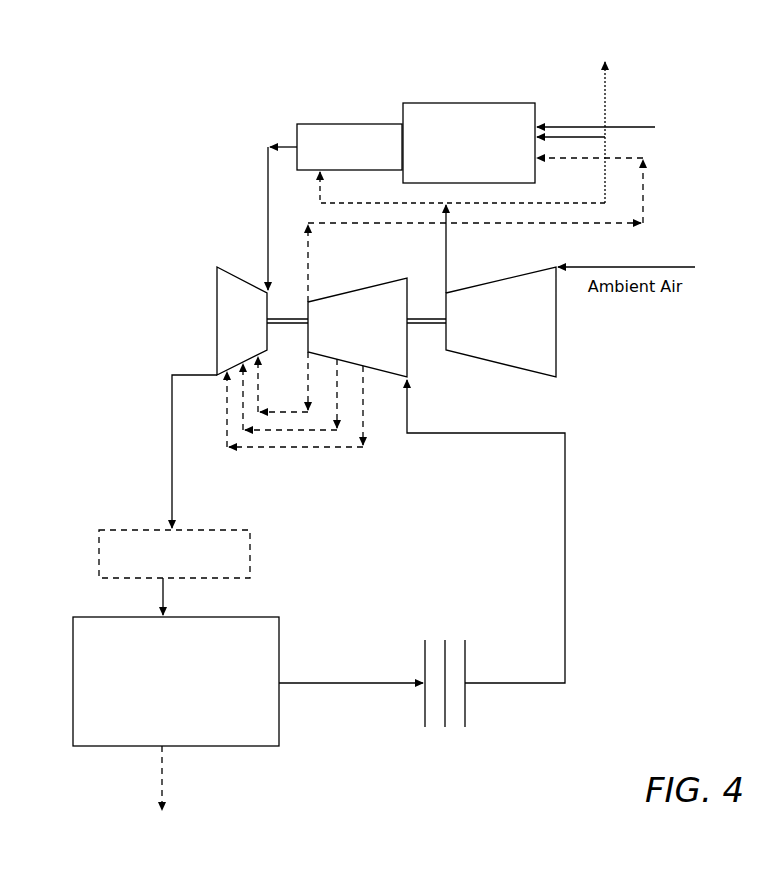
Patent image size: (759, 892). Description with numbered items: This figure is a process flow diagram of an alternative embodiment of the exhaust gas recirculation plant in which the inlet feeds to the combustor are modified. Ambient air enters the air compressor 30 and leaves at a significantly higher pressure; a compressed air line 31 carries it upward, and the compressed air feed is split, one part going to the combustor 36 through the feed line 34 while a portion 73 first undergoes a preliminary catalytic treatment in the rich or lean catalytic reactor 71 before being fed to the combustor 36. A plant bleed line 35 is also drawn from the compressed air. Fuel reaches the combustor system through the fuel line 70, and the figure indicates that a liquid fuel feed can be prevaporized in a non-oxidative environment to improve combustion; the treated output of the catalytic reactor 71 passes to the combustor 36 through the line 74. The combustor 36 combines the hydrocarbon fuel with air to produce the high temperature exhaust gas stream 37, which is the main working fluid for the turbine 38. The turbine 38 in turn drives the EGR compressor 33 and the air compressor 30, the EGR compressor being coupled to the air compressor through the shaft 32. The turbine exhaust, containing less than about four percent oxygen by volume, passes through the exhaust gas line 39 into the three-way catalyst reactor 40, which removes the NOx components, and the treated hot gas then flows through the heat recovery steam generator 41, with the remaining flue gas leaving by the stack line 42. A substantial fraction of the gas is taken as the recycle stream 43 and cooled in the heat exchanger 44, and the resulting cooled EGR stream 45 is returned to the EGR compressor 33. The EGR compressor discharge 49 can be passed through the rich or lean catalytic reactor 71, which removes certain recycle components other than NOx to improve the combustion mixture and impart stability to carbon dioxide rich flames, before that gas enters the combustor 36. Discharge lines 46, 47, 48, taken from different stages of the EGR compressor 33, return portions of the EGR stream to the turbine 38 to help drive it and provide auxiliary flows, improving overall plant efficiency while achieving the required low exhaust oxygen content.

The compressor 30 is at (557, 355).
The compressed air line 31 is at (450, 268).
The shaft 32 is at (422, 325).
The EGR compressor 33 is at (394, 283).
The feed line 34 is at (569, 137).
The plant bleed line 35 is at (607, 100).
The combustor 36 is at (338, 123).
The exhaust gas stream 37 is at (266, 228).
The turbine 38 is at (256, 327).
The exhaust gas line 39 is at (174, 497).
The 3-way catalyst reactor 40 is at (97, 558).
The heat recovery steam generator 41 is at (73, 667).
The stack line 42 is at (165, 790).
The recycle stream 43 is at (360, 684).
The heat exchanger 44 is at (447, 729).
The cooled EGR stream 45 is at (508, 683).
The discharge line 46 is at (330, 449).
The discharge line 47 is at (290, 432).
The discharge line 48 is at (259, 396).
The EGR compressor discharge 49 is at (310, 272).
The fuel line 70 is at (682, 116).
The rich or lean catalytic reactor 71 is at (462, 103).
The portion 73 is at (648, 200).
The reactor to combustor line 74 is at (338, 203).